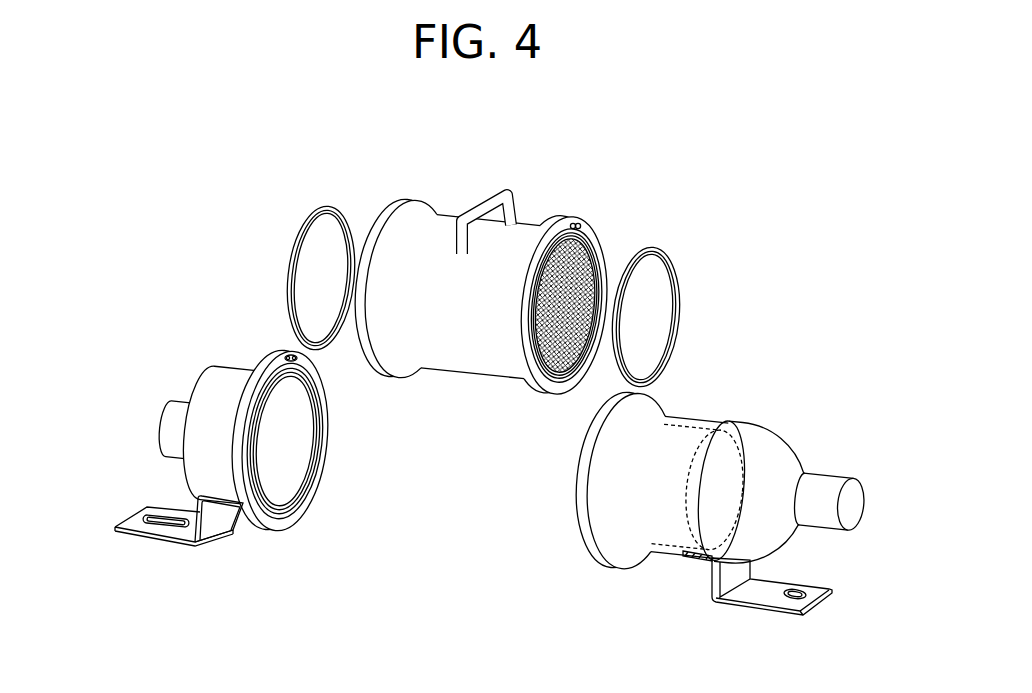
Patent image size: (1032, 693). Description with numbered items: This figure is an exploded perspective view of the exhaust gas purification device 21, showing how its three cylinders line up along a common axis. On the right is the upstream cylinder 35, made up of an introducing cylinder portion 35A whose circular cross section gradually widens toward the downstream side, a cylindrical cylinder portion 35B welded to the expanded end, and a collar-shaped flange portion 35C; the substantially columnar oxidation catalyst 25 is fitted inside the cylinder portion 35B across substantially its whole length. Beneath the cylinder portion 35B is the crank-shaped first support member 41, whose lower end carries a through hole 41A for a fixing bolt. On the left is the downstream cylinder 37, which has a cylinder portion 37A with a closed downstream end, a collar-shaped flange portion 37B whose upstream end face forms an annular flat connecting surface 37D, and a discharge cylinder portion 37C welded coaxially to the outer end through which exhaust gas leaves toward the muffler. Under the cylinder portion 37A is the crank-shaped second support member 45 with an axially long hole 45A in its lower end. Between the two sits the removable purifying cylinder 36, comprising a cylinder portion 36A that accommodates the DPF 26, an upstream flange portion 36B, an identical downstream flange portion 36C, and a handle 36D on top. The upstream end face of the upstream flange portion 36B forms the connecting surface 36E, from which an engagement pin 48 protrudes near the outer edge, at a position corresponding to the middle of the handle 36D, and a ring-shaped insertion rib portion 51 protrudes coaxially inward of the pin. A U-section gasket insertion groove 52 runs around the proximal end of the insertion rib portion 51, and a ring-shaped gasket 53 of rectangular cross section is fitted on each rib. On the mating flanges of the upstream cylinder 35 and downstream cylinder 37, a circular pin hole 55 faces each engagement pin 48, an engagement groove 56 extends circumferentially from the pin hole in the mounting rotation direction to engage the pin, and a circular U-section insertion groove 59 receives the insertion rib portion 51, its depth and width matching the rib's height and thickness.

The exhaust gas purification device 21 is at (245, 187).
The oxidation catalyst 25 is at (690, 415).
The DPF 26 is at (581, 287).
The upstream cylinder 35 is at (685, 505).
The introducing cylinder portion 35A is at (796, 455).
The cylinder portion 35B is at (668, 557).
The flange portion 35C is at (580, 487).
The purifying cylinder 36 is at (496, 281).
The cylinder portion 36A is at (526, 232).
The upstream flange portion 36B is at (598, 247).
The downstream flange portion 36C is at (396, 206).
The handle 36D is at (470, 206).
The connecting surface 36E is at (542, 393).
The downstream cylinder 37 is at (232, 446).
The cylinder portion 37A is at (228, 368).
The flange portion 37B is at (305, 508).
The discharge cylinder portion 37C is at (163, 405).
The connecting surface 37D is at (278, 518).
The first support member 41 is at (781, 601).
The through hole 41A is at (803, 590).
The second support member 45 is at (161, 538).
The long hole 45A is at (163, 527).
The engagement pin 48 is at (578, 222).
The insertion rib portion 51 is at (564, 381).
The gasket insertion groove 52 is at (577, 360).
The gasket 53 is at (328, 207).
The pin hole 55 is at (298, 359).
The engagement groove 56 is at (284, 354).
The insertion groove 59 is at (317, 472).